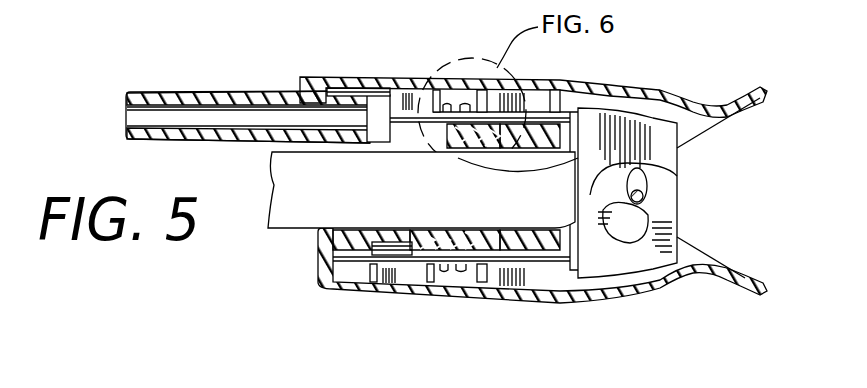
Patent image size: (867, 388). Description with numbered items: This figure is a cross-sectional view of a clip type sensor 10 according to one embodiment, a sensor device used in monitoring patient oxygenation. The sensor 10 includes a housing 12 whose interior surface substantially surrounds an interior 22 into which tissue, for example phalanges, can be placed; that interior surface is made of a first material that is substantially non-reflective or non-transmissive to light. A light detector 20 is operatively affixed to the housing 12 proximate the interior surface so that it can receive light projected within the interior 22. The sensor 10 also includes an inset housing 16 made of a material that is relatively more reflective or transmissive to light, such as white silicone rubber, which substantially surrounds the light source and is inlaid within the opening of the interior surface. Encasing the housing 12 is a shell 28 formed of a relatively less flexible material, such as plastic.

The sensor device 10 is at (700, 82).
The housing 12 is at (546, 262).
The inset housing 16 is at (505, 242).
The light detector 20 is at (431, 240).
The interior 22 is at (383, 188).
The shell 28 is at (537, 79).